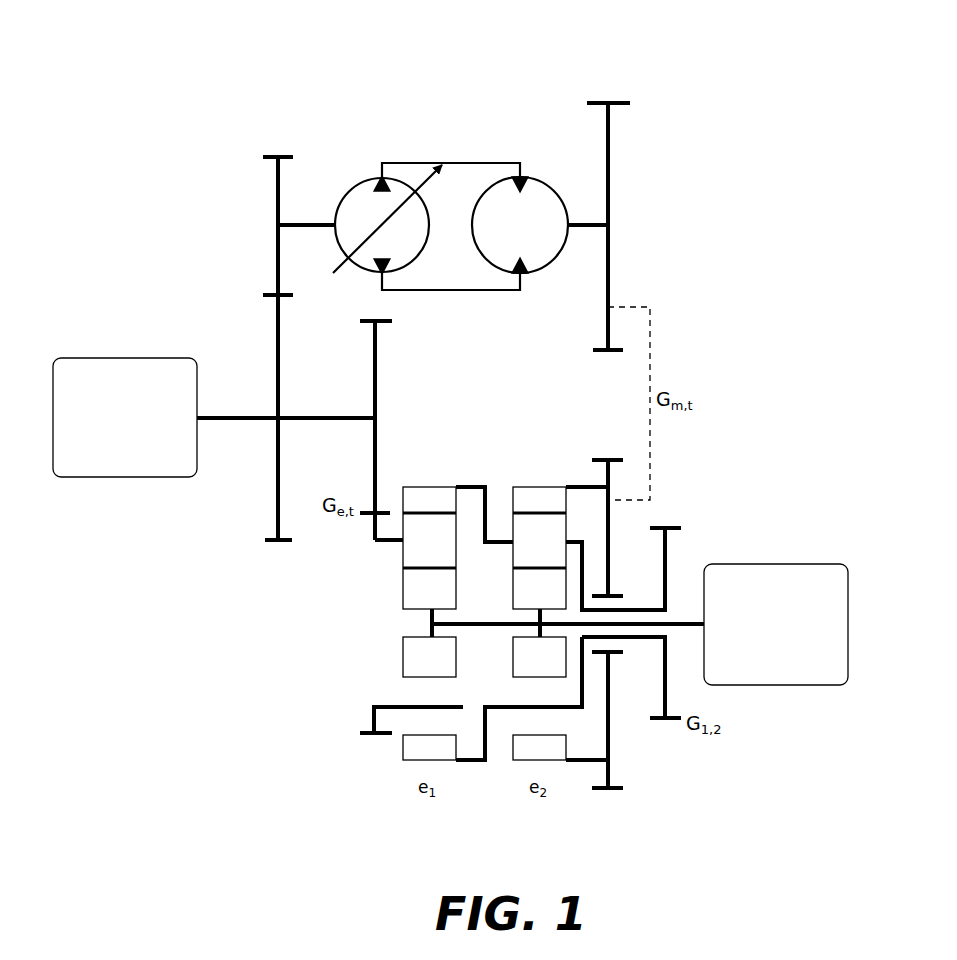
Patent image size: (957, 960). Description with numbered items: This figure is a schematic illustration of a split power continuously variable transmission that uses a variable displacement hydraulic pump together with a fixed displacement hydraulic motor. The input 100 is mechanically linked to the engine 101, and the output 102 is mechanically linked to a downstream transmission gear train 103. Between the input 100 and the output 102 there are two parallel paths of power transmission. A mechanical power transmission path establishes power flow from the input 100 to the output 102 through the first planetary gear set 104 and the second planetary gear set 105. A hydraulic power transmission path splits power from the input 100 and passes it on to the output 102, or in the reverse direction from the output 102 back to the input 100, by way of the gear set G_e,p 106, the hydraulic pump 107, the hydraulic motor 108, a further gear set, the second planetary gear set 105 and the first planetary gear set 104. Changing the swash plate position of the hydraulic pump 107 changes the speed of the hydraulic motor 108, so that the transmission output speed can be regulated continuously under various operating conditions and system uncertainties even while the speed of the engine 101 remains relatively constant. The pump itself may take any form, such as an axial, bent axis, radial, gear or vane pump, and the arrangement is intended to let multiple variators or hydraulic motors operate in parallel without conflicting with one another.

The input 100 is at (245, 418).
The engine 101 is at (427, 85).
The output 102 is at (690, 622).
The downstream transmission gear train 103 is at (776, 624).
The first planetary gear set 104 is at (456, 476).
The second planetary gear set 105 is at (566, 476).
The gear set G_e,p 106 is at (300, 310).
The hydraulic pump 107 is at (358, 205).
The hydraulic motor 108 is at (548, 198).